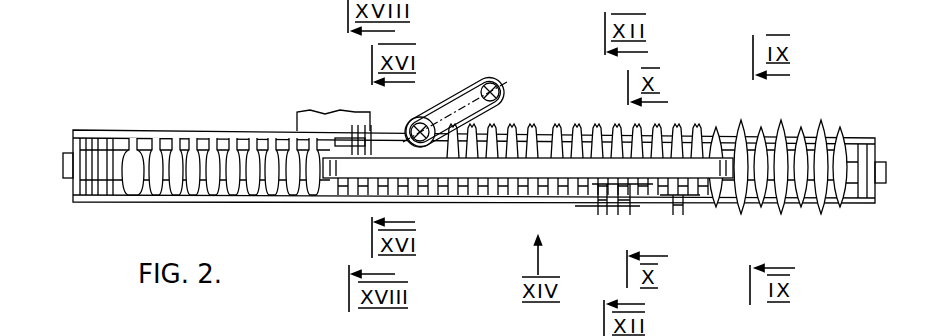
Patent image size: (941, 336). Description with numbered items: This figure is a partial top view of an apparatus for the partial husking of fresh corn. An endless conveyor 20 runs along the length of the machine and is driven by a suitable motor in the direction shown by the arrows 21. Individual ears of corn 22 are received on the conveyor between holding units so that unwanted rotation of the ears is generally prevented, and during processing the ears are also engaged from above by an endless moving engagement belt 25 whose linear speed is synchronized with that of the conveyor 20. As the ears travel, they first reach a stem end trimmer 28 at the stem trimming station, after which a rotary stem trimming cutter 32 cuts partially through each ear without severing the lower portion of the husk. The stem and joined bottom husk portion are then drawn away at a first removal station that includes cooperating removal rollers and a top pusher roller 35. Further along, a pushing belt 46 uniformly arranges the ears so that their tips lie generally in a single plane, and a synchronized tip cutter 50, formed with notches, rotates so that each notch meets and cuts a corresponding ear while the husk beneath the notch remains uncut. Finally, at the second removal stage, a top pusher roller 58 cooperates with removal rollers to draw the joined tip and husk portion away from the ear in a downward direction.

The endless conveyor 20 is at (858, 138).
The arrows 21 is at (816, 240).
The ears of corn 22 is at (806, 128).
The endless moving engagement belt 25 is at (690, 158).
The stem end trimmer 28 is at (690, 195).
The rotary stem trimming cutter 32 is at (644, 188).
The top pusher roller 35 is at (602, 190).
The pushing belt 46 is at (446, 102).
The synchronized tip cutter 50 is at (400, 133).
The top pusher roller 58 is at (355, 128).